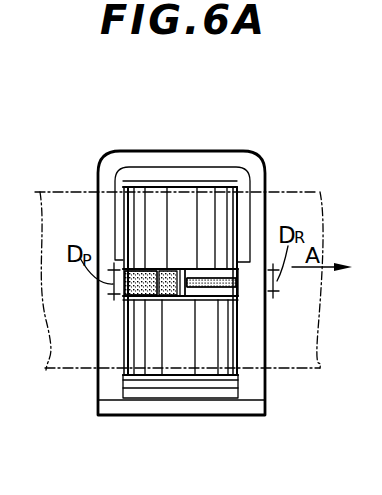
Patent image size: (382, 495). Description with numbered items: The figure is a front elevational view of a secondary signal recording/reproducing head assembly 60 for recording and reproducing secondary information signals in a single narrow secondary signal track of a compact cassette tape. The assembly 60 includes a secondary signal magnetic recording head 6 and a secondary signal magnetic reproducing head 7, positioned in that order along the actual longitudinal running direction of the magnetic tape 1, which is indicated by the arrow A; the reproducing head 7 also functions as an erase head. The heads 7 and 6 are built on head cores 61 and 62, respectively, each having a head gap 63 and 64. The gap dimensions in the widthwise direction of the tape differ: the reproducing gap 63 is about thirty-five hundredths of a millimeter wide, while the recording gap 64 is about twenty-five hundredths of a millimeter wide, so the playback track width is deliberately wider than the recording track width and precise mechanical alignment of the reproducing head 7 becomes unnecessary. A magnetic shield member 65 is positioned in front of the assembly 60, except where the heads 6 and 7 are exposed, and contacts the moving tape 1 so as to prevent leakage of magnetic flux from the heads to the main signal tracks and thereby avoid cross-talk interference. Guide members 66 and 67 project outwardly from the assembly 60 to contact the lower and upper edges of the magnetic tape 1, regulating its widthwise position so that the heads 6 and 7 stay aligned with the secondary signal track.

The magnetic tape 1 is at (326, 222).
The secondary signal magnetic recording head 6 is at (209, 315).
The secondary signal magnetic reproducing head 7 is at (149, 315).
The secondary signal recording/reproducing head assembly 60 is at (115, 127).
The head core 61 is at (167, 277).
The head core 62 is at (195, 278).
The head gap 63 is at (128, 298).
The head gap 64 is at (215, 290).
The magnetic shield member 65 is at (162, 347).
The guide member 66 is at (180, 390).
The guide member 67 is at (177, 175).